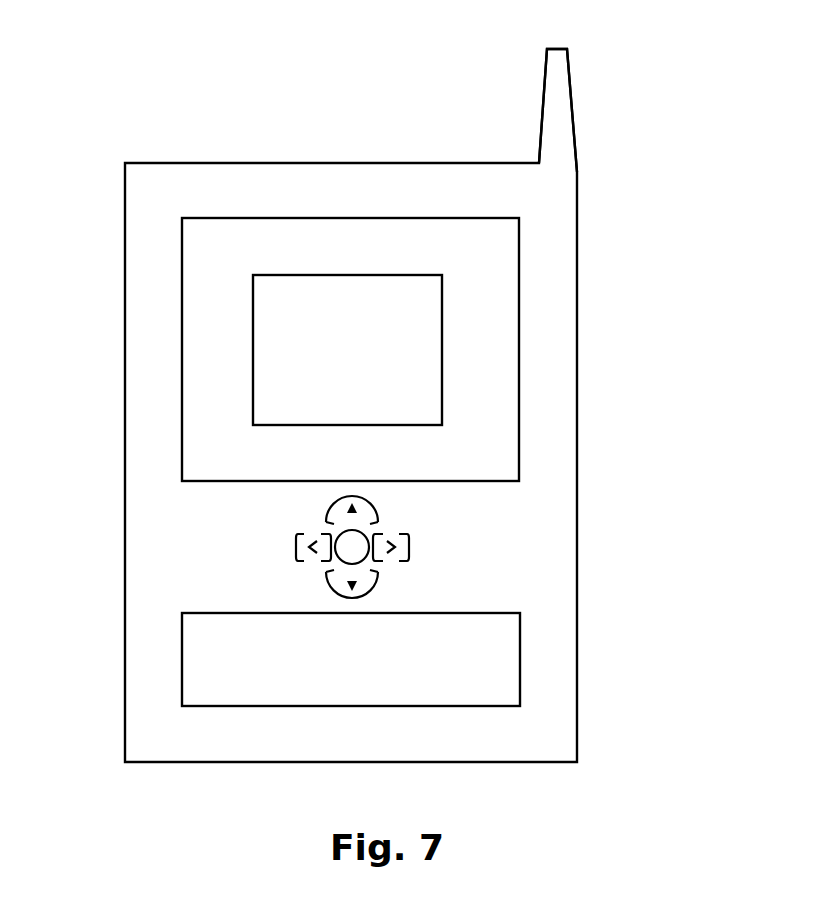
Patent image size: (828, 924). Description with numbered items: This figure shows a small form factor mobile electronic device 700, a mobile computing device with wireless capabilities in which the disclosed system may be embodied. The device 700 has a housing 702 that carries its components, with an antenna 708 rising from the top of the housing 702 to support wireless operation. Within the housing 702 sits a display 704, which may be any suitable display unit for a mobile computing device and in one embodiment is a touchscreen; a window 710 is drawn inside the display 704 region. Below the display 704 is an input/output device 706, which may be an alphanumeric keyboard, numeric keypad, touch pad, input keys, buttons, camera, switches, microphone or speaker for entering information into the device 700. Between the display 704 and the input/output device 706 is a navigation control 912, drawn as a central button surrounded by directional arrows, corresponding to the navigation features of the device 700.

The small form factor device 700 is at (140, 60).
The housing 702 is at (577, 461).
The display 704 is at (519, 237).
The input/output (I/O) device 706 is at (520, 648).
The antenna 708 is at (543, 98).
The display window 710 is at (442, 374).
The navigation control 912 is at (434, 536).